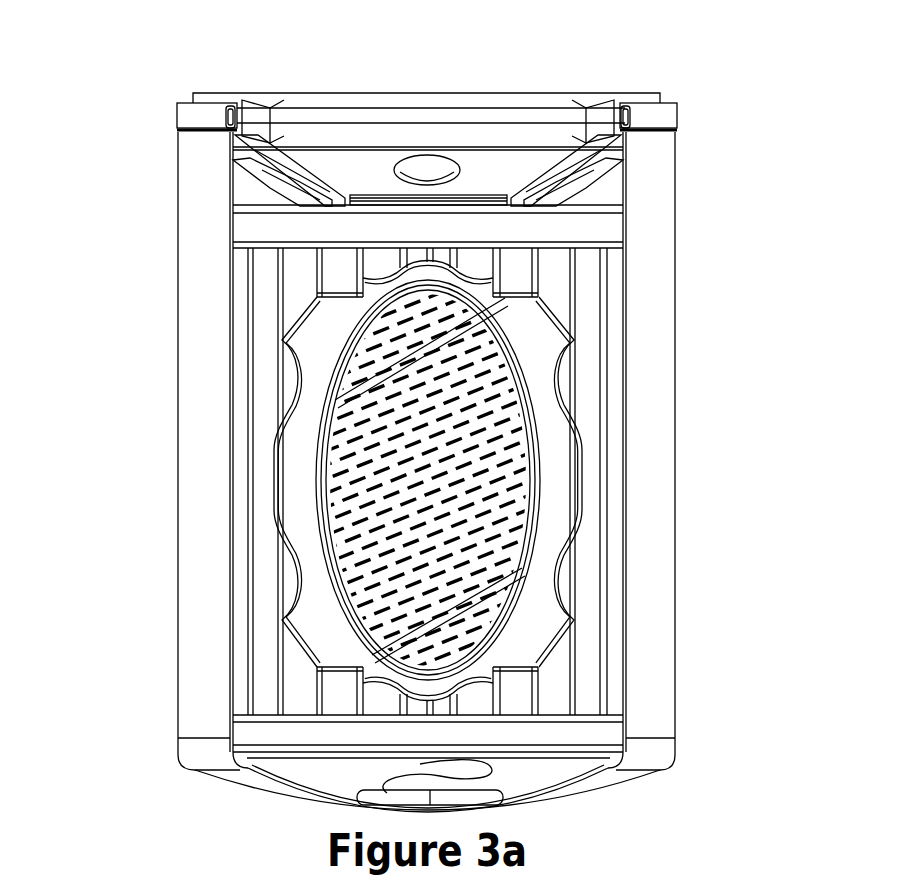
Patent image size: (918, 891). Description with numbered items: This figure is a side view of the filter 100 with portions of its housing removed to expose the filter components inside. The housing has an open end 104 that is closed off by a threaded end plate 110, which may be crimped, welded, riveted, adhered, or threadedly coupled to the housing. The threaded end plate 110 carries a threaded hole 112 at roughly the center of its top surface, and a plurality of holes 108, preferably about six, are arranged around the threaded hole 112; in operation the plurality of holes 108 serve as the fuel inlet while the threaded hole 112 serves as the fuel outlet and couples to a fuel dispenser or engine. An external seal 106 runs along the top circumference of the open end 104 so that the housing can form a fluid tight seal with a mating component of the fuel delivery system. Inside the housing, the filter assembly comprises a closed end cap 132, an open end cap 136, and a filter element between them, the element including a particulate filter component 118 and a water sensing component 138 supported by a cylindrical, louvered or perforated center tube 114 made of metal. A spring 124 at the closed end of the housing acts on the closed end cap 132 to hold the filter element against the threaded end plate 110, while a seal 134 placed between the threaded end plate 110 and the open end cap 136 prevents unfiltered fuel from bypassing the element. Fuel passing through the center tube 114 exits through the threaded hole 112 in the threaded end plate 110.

The filter 100 is at (625, 53).
The open end 104 is at (142, 85).
The external seal 106 is at (655, 95).
The plurality of holes 108 is at (549, 162).
The threaded end plate 110 is at (598, 117).
The threaded hole 112 is at (460, 195).
The center tube 114 is at (505, 527).
The particulate filter component 118 is at (578, 325).
The spring 124 is at (520, 795).
The closed end cap 132 is at (598, 732).
The seal 134 is at (600, 148).
The open end cap 136 is at (600, 228).
The water sensing component 138 is at (553, 465).